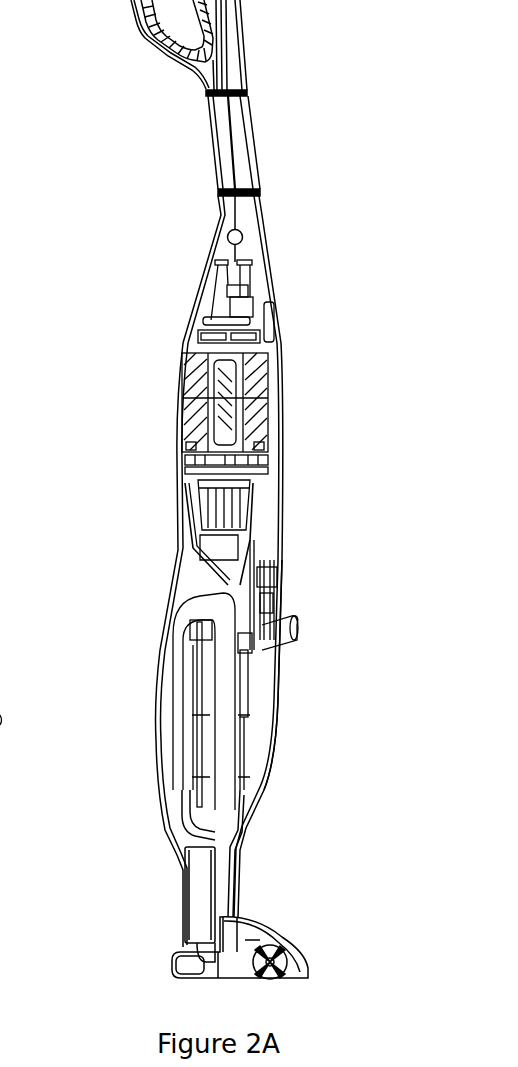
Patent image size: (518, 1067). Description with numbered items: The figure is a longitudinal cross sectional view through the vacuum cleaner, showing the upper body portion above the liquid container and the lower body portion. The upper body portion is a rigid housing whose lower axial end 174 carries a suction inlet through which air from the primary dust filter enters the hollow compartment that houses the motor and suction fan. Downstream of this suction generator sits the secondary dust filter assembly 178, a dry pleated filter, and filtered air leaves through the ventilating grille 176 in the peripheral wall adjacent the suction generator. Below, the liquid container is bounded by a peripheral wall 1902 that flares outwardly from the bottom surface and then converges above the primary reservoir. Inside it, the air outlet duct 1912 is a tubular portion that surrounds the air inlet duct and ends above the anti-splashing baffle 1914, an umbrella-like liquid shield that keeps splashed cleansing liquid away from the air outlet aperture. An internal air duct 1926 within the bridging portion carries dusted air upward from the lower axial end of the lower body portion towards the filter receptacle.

The ventilating grille 176 is at (256, 377).
The secondary dust filter assembly 178 is at (252, 507).
The lower axial end 174 is at (184, 547).
The air outlet duct 1912 is at (248, 675).
The peripheral wall 1902 is at (277, 743).
The internal air duct 1926 is at (167, 762).
The anti-splashing baffle 1914 is at (247, 782).